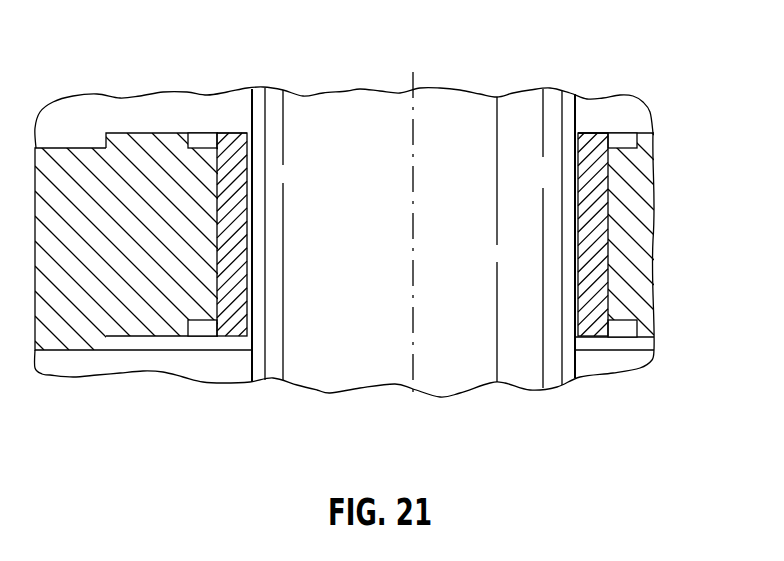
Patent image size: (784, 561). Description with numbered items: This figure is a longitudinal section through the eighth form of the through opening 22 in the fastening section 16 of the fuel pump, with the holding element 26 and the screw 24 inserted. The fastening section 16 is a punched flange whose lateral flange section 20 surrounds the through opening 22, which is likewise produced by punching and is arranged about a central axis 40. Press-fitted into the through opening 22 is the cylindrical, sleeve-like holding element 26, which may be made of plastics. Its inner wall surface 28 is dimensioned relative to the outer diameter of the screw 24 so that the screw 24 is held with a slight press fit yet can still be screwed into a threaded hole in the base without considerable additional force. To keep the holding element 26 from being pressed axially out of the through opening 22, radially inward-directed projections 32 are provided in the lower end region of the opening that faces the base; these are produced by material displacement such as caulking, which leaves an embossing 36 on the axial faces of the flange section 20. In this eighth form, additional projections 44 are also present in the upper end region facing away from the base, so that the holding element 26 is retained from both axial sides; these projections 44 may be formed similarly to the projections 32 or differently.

The fastening section 16 is at (628, 241).
The flange section 20 is at (72, 310).
The through opening 22 is at (580, 288).
The screw 24 is at (343, 130).
The holding element 26 is at (233, 290).
The inner wall surface 28 is at (578, 188).
The projection 32 is at (230, 333).
The embossing 36 is at (205, 139).
The central axis 40 is at (413, 145).
The projection 44 is at (229, 140).